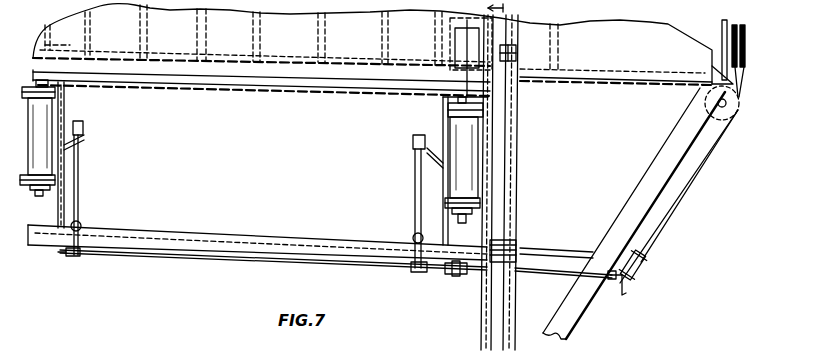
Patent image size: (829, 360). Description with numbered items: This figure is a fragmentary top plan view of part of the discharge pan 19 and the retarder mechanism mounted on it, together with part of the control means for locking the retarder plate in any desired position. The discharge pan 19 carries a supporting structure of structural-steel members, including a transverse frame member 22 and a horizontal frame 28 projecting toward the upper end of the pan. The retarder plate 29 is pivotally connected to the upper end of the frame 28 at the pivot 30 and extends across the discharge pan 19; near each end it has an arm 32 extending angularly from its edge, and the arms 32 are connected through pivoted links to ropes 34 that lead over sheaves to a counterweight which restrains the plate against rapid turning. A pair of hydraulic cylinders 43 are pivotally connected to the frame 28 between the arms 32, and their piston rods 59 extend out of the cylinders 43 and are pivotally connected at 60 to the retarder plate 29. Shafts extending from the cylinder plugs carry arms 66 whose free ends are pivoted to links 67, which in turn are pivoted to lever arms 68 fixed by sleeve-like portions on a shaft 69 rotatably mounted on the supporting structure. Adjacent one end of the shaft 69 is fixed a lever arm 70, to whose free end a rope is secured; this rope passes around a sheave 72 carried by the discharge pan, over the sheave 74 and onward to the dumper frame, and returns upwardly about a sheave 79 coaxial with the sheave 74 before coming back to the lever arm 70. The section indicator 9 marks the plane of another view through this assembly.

The section line 9- 9 is at (474, 180).
The discharge pan 19 is at (614, 181).
The frame member 22 is at (554, 252).
The frame 28 is at (521, 176).
The retarder plate 29 is at (593, 69).
The pivot 30 is at (520, 53).
The arm 32 is at (515, 152).
The rope 34 is at (505, 245).
The hydraulic cylinder 43 is at (50, 122).
The piston rod 59 is at (467, 80).
The pivotal connection 60 is at (446, 48).
The arm 66 is at (80, 152).
The link 67 is at (80, 195).
The lever arm 68 is at (80, 240).
The shaft 69 is at (359, 266).
The lever arm 70 is at (616, 297).
The sheave 72 is at (646, 265).
The sheave 74 is at (746, 44).
The sheave 79 is at (745, 62).